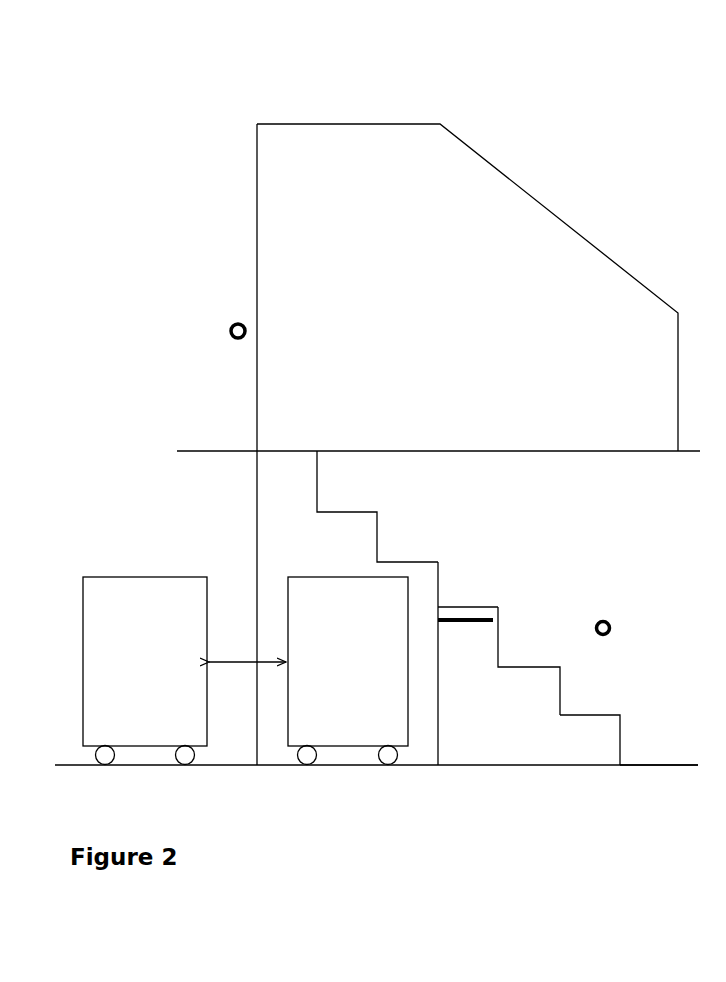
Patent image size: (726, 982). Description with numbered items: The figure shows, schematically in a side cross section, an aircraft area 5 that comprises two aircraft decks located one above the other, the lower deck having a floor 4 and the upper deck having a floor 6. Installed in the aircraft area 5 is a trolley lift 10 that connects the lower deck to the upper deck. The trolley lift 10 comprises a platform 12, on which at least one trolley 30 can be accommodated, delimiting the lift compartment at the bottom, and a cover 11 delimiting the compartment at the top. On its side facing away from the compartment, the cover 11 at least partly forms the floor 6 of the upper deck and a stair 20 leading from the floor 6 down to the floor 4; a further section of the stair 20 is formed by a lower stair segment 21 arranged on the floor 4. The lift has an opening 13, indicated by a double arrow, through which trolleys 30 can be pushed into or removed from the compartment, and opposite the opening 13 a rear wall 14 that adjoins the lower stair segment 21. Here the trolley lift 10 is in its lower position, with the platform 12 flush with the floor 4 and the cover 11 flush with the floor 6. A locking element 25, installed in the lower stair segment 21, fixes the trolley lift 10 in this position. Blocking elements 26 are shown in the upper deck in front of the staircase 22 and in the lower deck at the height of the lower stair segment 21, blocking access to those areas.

The floor 4 is at (662, 767).
The aircraft area 5 is at (151, 80).
The floor 6 is at (186, 450).
The trolley lift 10 is at (283, 527).
The cover 11 is at (282, 450).
The platform 12 is at (352, 767).
The opening 13 is at (257, 568).
The rear wall 14 is at (440, 588).
The stair 20 is at (538, 553).
The lower stair segment 21 is at (612, 715).
The staircase 22 is at (492, 242).
The locking element 25 is at (462, 618).
The blocking element 26 is at (231, 328).
The trolley 30 is at (178, 730).